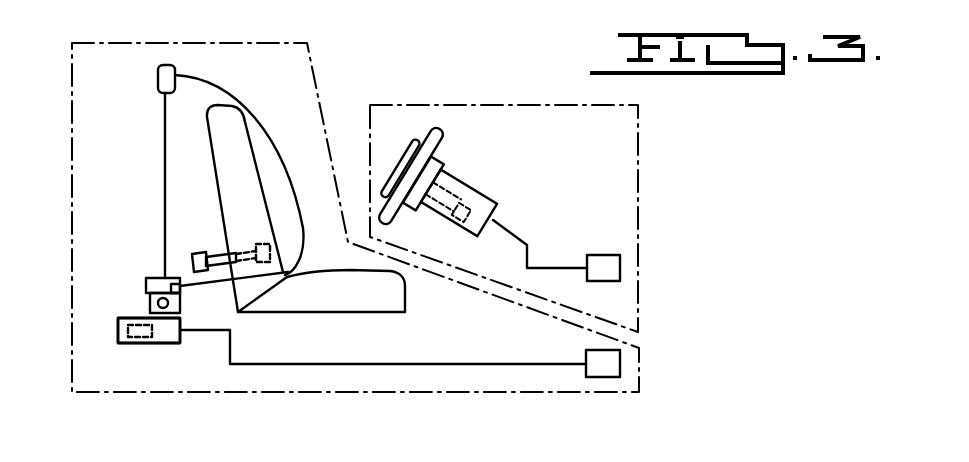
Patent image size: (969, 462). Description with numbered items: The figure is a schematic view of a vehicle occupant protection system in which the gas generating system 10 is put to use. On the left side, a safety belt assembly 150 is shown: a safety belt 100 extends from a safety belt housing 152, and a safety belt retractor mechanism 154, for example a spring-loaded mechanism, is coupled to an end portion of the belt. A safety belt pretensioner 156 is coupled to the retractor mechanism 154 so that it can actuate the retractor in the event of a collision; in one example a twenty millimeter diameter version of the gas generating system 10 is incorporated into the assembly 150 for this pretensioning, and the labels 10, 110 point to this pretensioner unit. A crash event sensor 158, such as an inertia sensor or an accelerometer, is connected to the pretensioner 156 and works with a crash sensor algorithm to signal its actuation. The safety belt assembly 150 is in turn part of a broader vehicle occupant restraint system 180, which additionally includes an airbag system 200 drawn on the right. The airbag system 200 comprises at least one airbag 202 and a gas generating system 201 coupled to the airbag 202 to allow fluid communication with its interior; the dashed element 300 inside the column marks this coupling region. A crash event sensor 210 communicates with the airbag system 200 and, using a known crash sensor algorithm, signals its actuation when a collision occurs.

The gas generating system 10 is at (118, 330).
The safety belt 100 is at (255, 107).
The seat adjustment device 110 is at (101, 342).
The safety belt assembly 150 is at (340, 393).
The safety belt housing 152 is at (150, 300).
The safety belt retractor mechanism 154 is at (155, 278).
The safety belt pretensioner 156 is at (167, 343).
The crash event sensor 158 is at (600, 360).
The vehicle occupant restraint system 180 is at (432, 74).
The airbag system 200 is at (508, 104).
The gas generating system 201 is at (455, 192).
The airbag 202 is at (437, 160).
The crash event sensor 210 is at (602, 262).
The sensor 300 is at (470, 212).